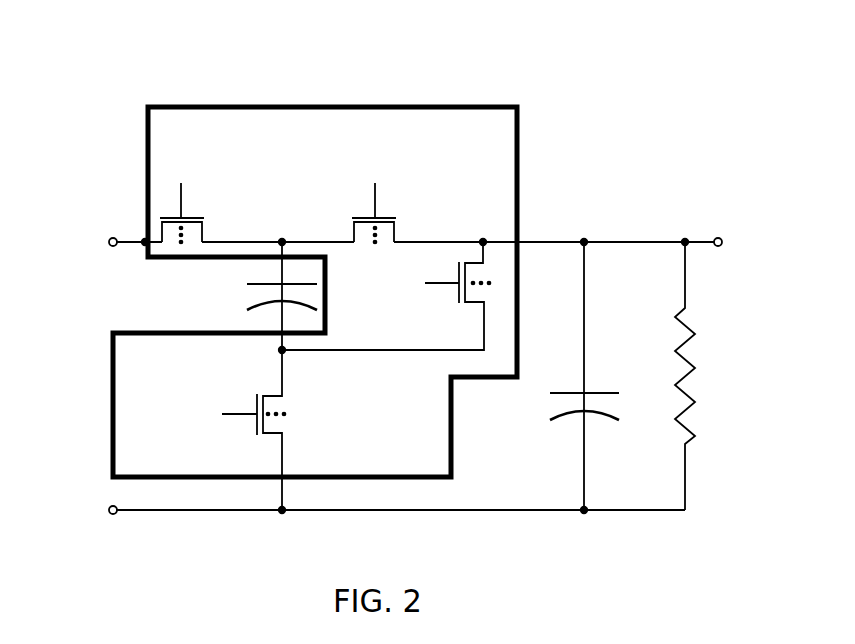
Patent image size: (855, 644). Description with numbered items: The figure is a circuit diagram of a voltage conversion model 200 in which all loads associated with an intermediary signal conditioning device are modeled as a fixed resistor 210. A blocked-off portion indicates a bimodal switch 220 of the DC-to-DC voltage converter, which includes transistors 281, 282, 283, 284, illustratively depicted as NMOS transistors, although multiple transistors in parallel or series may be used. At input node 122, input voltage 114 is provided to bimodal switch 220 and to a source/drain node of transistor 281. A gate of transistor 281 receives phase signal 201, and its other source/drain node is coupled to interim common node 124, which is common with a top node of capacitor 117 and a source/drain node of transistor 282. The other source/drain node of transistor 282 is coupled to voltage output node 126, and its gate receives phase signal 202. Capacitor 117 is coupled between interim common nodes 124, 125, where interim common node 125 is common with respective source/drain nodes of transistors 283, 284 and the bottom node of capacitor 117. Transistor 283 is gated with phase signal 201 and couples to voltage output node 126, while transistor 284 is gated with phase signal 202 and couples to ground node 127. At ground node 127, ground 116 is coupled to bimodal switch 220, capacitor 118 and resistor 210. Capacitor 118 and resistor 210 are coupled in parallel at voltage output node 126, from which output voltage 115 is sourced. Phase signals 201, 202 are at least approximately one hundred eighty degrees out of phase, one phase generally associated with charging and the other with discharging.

The voltage conversion model 200 is at (652, 66).
The bimodal switch 220 is at (520, 148).
The input port or node 122 is at (145, 242).
The input voltage 114 is at (109, 240).
The phase signal 201 is at (183, 183).
The phase signal 202 is at (376, 183).
The transistor 281 is at (205, 222).
The transistor 282 is at (365, 192).
The transistor 283 is at (473, 305).
The transistor 284 is at (288, 436).
The interim common node 124 is at (282, 242).
The interim common node 125 is at (282, 350).
The voltage output node 126 is at (483, 242).
The capacitor 117 is at (247, 308).
The capacitor 118 is at (548, 418).
The fixed resistor 210 is at (695, 438).
The ground node 127 is at (285, 513).
The output voltage 115 is at (722, 246).
The ground 116 is at (108, 511).